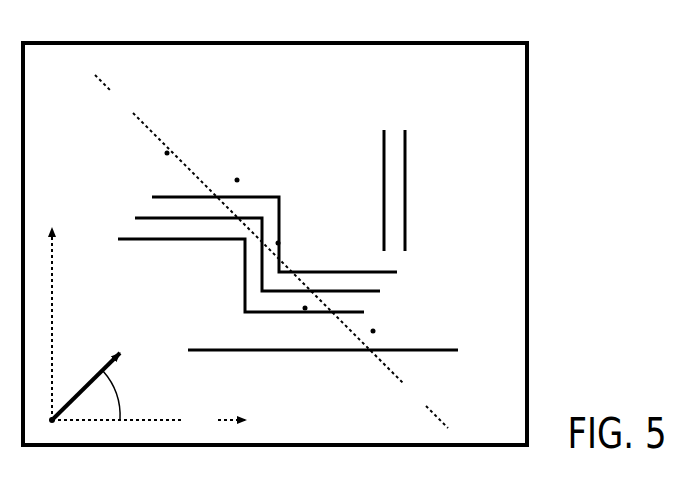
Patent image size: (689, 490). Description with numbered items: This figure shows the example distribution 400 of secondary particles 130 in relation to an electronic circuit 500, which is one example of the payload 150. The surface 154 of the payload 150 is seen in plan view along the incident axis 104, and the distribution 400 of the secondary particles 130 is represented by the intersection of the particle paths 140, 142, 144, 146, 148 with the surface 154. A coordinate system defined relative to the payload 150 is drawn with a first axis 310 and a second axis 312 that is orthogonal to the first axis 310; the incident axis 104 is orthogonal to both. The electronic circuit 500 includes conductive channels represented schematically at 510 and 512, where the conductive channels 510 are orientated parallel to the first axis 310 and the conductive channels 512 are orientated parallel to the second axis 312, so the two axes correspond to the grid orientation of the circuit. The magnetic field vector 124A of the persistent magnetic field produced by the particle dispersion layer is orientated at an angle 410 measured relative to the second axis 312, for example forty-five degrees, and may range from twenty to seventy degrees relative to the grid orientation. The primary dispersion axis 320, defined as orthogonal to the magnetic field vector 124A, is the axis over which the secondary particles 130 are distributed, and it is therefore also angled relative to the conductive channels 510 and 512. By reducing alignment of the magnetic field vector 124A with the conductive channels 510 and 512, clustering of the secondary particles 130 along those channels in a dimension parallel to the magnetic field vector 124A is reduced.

The electronic circuit 500 is at (530, 100).
The payload 150 is at (530, 165).
The surface 154 is at (491, 228).
The secondary particles 130 is at (344, 64).
The distribution 400 is at (352, 121).
The primary dispersion axis 320 is at (271, 251).
The particle path 140 is at (160, 156).
The particle path 142 is at (235, 170).
The particle path 144 is at (287, 240).
The particle path 146 is at (310, 318).
The particle path 148 is at (380, 329).
The incident axis 104 is at (272, 252).
The conductive channels 510 is at (262, 284).
The conductive channels 512 is at (202, 199).
The first axis 310 is at (53, 324).
The second axis 312 is at (149, 419).
The magnetic field vector 124A is at (108, 372).
The angle 410 is at (130, 395).